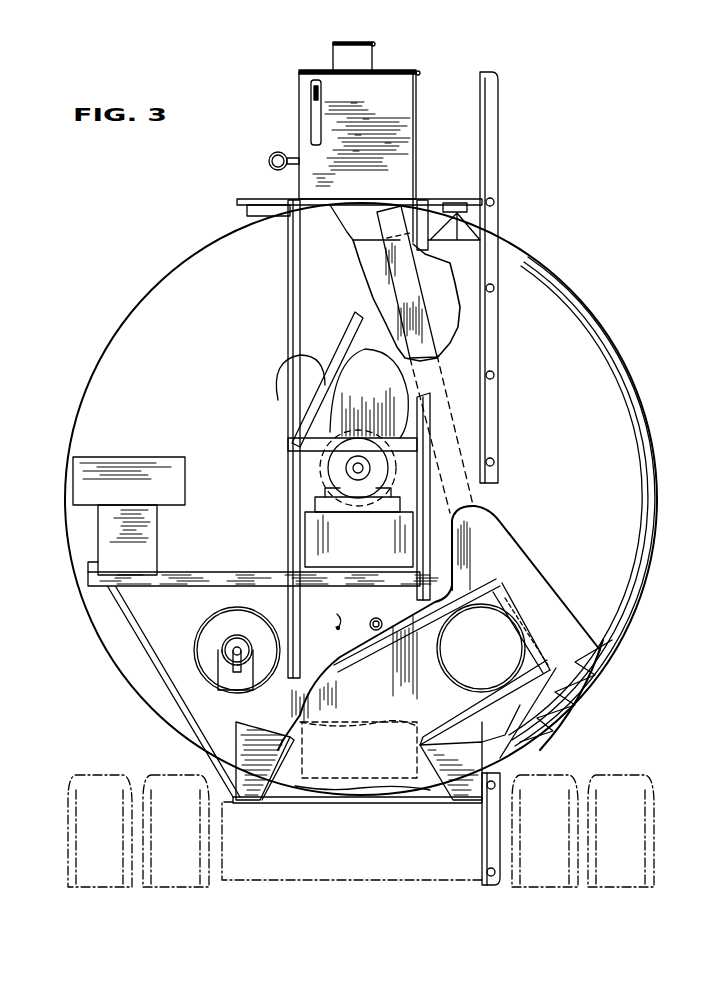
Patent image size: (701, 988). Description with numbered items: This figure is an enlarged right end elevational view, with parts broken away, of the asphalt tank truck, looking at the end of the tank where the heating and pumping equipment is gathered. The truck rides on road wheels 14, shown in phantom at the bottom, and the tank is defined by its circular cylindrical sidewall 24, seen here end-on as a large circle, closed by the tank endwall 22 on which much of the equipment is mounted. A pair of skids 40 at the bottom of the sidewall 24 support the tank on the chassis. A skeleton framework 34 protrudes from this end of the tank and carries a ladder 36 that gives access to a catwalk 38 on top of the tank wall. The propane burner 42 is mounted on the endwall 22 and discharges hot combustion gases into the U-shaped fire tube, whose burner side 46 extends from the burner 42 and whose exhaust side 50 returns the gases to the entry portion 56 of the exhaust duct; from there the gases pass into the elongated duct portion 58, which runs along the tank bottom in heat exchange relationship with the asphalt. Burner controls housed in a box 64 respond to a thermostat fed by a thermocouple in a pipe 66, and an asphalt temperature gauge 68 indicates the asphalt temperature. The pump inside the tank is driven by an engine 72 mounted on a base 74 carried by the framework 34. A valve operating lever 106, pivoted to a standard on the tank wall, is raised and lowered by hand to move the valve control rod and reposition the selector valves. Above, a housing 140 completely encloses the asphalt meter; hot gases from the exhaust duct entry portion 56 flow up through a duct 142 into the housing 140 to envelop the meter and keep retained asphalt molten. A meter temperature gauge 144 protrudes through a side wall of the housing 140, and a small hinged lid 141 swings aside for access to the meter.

The road wheels 14 is at (75, 814).
The tank endwall 22 is at (558, 424).
The cylindrical sidewall 24 is at (558, 712).
The skeleton framework 34 is at (288, 283).
The ladder 36 is at (500, 178).
The catwalk 38 is at (456, 203).
The skids 40 is at (258, 745).
The propane burner 42 is at (222, 652).
The burner side of fire tube 46 is at (200, 620).
The exhaust side of fire tube 50 is at (500, 606).
The exhaust duct entry portion 56 is at (537, 656).
The elongated exhaust duct portion 58 is at (350, 792).
The burner control box 64 is at (145, 555).
The thermocouple pipe 66 is at (328, 613).
The asphalt temperature gauge 68 is at (376, 618).
The engine 72 is at (330, 466).
The engine base 74 is at (372, 557).
The valve operating lever 106 is at (312, 90).
The meter housing 140 is at (390, 72).
The hinged lid 141 is at (345, 43).
The duct 142 is at (426, 318).
The meter temperature gauge 144 is at (270, 160).